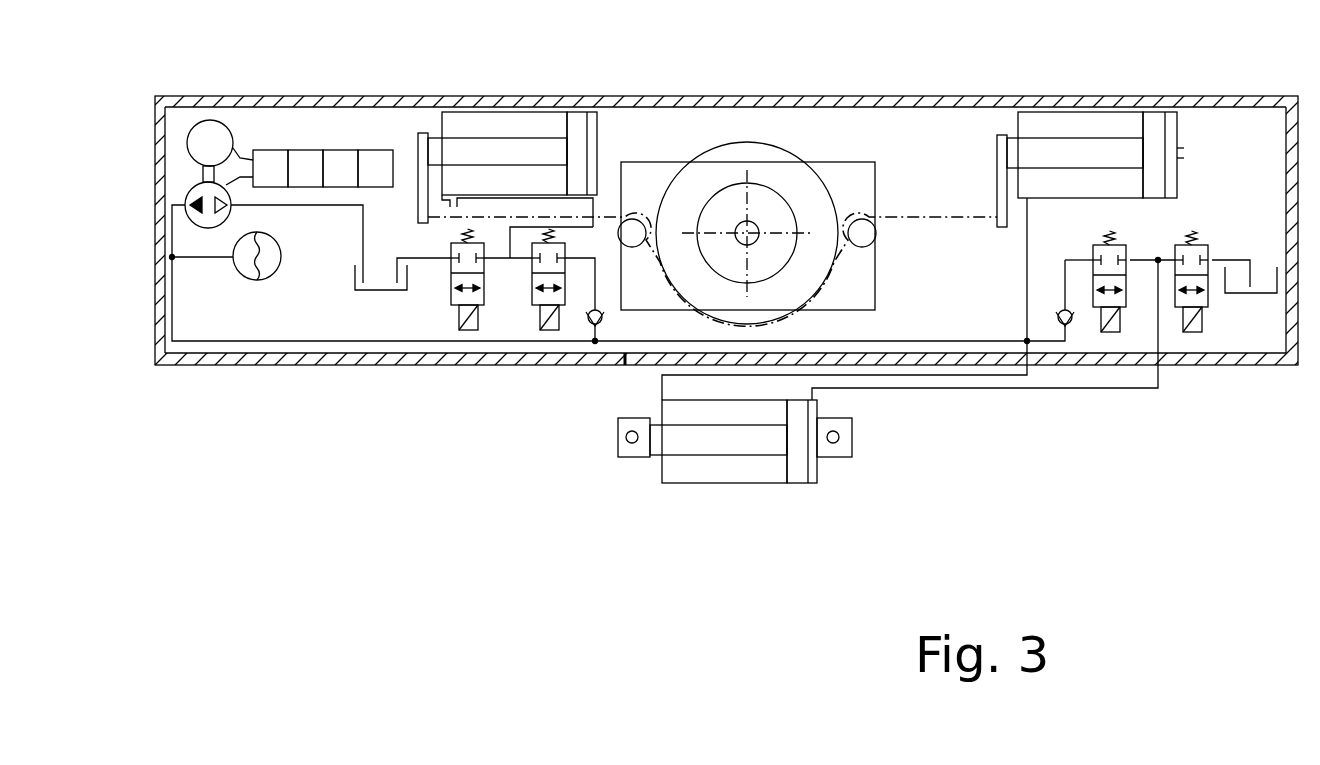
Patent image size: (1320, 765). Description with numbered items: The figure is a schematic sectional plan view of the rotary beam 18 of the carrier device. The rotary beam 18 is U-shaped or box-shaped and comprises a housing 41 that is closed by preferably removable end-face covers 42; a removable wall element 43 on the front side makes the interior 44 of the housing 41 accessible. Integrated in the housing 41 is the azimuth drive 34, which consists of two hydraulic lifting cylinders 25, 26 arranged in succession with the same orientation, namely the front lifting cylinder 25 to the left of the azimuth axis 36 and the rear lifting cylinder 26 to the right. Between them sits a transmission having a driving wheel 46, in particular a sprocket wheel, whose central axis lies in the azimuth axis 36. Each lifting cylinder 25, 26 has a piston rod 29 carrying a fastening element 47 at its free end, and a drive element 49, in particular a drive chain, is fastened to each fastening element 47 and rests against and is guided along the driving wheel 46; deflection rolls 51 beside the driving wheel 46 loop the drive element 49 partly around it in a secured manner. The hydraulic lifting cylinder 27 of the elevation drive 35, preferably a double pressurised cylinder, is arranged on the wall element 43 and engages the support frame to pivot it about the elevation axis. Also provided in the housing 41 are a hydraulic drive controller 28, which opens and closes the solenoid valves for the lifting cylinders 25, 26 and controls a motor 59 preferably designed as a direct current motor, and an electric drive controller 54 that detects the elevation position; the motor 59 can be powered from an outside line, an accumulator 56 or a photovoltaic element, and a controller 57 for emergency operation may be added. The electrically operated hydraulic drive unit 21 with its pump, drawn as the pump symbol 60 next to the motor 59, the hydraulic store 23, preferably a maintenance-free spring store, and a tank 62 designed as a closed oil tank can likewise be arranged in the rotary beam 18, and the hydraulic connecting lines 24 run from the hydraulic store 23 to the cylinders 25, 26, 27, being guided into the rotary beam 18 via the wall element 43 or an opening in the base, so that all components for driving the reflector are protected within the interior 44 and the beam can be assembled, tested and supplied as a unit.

The rotary beam 18 is at (715, 250).
The hydraulic drive unit 21 is at (252, 163).
The hydraulic store 23 is at (240, 274).
The connecting lines 24 is at (594, 210).
The front lifting cylinder 25 is at (551, 88).
The rear lifting cylinder 26 is at (1129, 88).
The hydraulic lifting cylinder 27 is at (703, 498).
The hydraulic drive controller 28 is at (270, 168).
The piston rod 29 is at (806, 112).
The azimuth drive 34 is at (901, 130).
The elevation drive 35 is at (735, 511).
The azimuth axis 36 is at (753, 225).
The housing 41 is at (333, 96).
The end-face covers 42 is at (153, 138).
The wall element 43 is at (640, 360).
The interior 44 is at (303, 118).
The driving wheel 46 is at (747, 190).
The fastening element 47 is at (418, 143).
The drive element 49 is at (895, 217).
The deflection rolls 51 is at (631, 228).
The electric drive controller 54 is at (305, 168).
The accumulator 56 is at (340, 168).
The controller for emergency operation 57 is at (375, 168).
The motor 59 is at (219, 121).
The pump 60 is at (186, 198).
The tank 62 is at (363, 292).